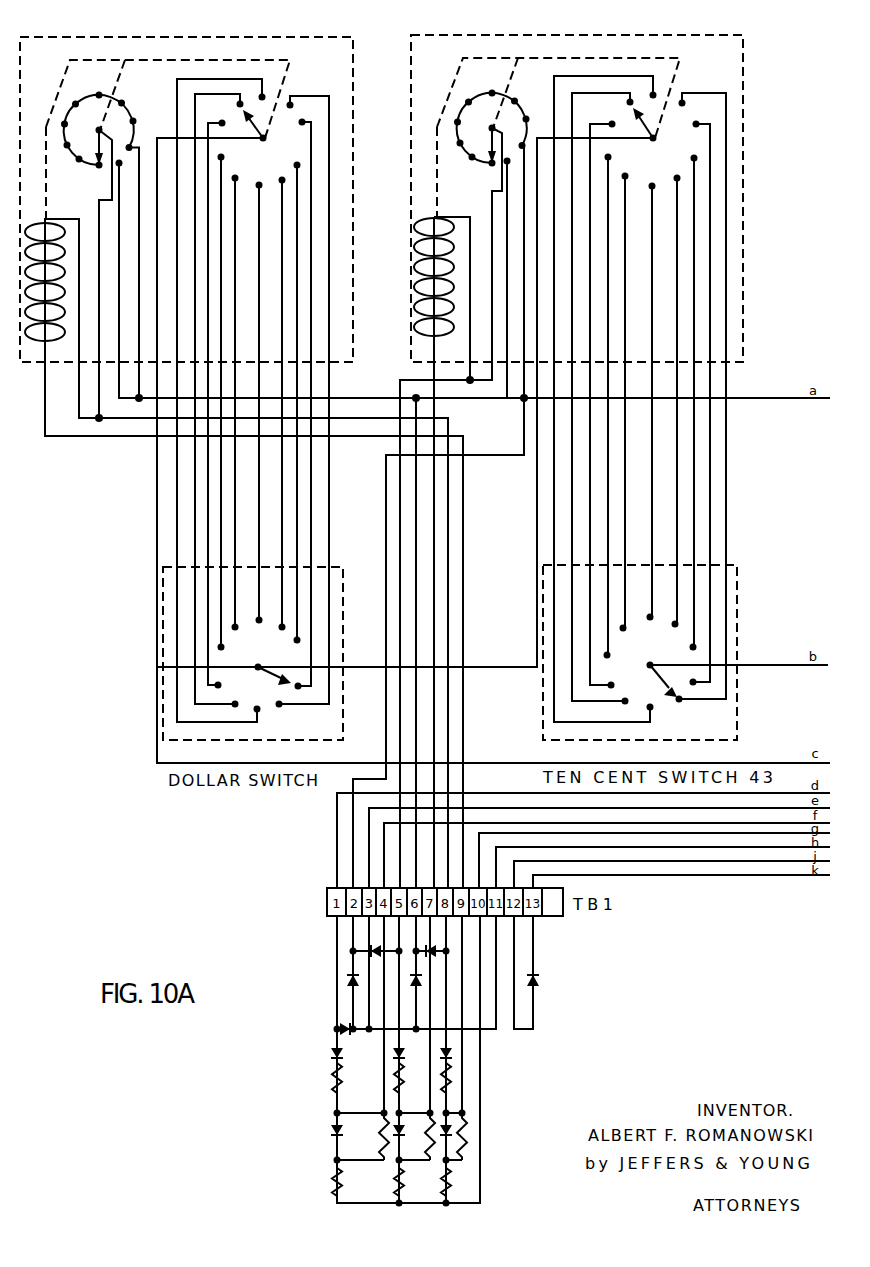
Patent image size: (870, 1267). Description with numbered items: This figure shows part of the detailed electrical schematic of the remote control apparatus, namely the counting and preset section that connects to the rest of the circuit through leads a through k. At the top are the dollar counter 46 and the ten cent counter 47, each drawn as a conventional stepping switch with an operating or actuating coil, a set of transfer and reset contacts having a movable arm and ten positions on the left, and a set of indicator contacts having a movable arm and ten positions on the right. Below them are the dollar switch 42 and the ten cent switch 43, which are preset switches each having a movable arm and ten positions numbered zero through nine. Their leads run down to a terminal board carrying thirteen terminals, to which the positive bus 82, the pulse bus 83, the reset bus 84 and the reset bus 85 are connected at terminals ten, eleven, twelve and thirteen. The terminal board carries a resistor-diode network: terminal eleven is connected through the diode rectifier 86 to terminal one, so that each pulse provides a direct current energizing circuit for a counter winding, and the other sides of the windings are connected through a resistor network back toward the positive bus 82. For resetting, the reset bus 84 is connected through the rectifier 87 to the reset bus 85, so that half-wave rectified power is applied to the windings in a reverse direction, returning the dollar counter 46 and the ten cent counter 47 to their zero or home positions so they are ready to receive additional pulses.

The dollar counter 46 is at (312, 42).
The ten cent counter 47 is at (695, 40).
The dollar switch 42 is at (175, 737).
The ten cent switch 43 is at (757, 766).
The positive bus 82 is at (700, 833).
The pulse bus 83 is at (679, 847).
The reset bus 84 is at (704, 861).
The reset bus 85 is at (714, 875).
The diode rectifier 86 is at (336, 1029).
The rectifier 87 is at (538, 986).